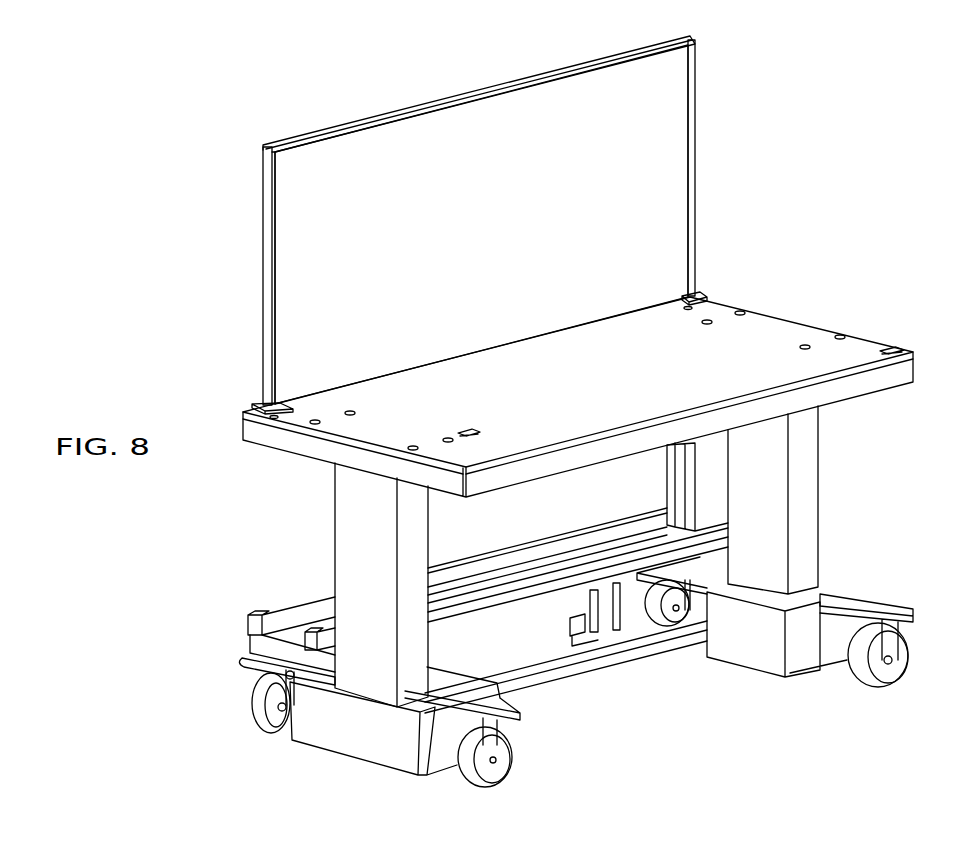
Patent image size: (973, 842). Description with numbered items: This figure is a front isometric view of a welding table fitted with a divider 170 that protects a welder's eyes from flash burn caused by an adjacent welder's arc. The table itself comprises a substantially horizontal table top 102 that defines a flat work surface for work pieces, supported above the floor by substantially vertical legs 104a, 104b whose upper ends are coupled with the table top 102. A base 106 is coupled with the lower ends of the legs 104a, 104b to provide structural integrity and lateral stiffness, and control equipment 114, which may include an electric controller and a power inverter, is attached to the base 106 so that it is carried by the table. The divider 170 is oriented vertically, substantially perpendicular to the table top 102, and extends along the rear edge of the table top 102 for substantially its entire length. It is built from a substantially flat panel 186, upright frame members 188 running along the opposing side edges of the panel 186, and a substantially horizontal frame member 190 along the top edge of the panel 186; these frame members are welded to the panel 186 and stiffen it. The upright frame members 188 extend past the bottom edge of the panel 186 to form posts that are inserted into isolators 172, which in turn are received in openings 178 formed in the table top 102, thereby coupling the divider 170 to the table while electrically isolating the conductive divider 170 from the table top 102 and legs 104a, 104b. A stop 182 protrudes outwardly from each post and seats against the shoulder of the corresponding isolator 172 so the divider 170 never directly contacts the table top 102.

The table top 102 is at (775, 325).
The leg 104a is at (355, 552).
The leg 104b is at (808, 540).
The base 106 is at (520, 528).
The control equipment 114 is at (707, 467).
The divider 170 is at (476, 220).
The isolators 172 is at (275, 410).
The openings 178 is at (475, 432).
The stop 182 is at (700, 293).
The panel 186 is at (683, 166).
The upright frame members 188 is at (695, 121).
The horizontal frame member 190 is at (388, 115).